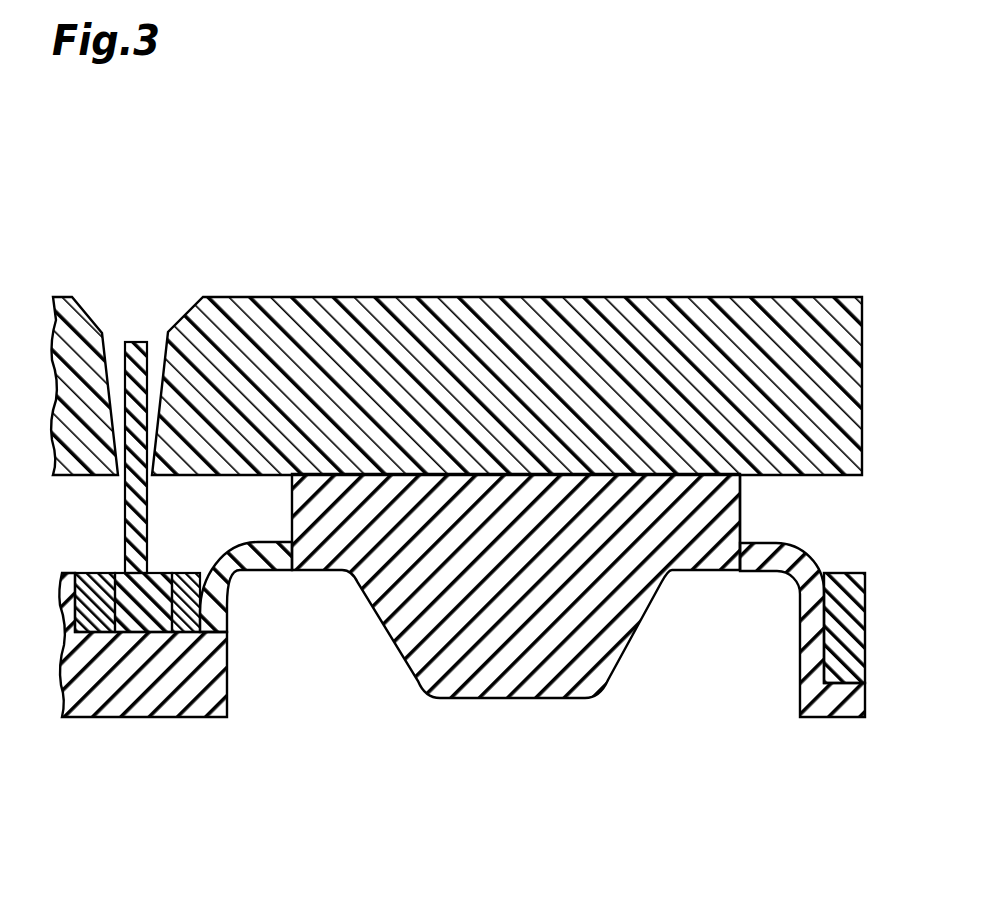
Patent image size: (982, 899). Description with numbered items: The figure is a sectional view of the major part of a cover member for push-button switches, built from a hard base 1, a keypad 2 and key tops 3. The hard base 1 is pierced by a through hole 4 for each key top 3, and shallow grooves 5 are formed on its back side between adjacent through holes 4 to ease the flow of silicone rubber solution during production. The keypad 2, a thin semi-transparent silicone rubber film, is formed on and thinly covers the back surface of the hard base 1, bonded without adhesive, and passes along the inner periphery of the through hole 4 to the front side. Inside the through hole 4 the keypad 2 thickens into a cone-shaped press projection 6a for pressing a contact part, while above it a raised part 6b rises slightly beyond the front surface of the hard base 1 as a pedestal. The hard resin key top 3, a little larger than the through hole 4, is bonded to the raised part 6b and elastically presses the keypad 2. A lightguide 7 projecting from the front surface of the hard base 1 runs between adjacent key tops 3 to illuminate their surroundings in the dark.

The hard base 1 is at (173, 607).
The keypad 2 is at (220, 612).
The key top 3 is at (83, 323).
The through hole 4 is at (818, 622).
The groove 5 is at (115, 603).
The press projection 6a is at (475, 672).
The raised part 6b is at (743, 503).
The lightguide 7 is at (130, 340).